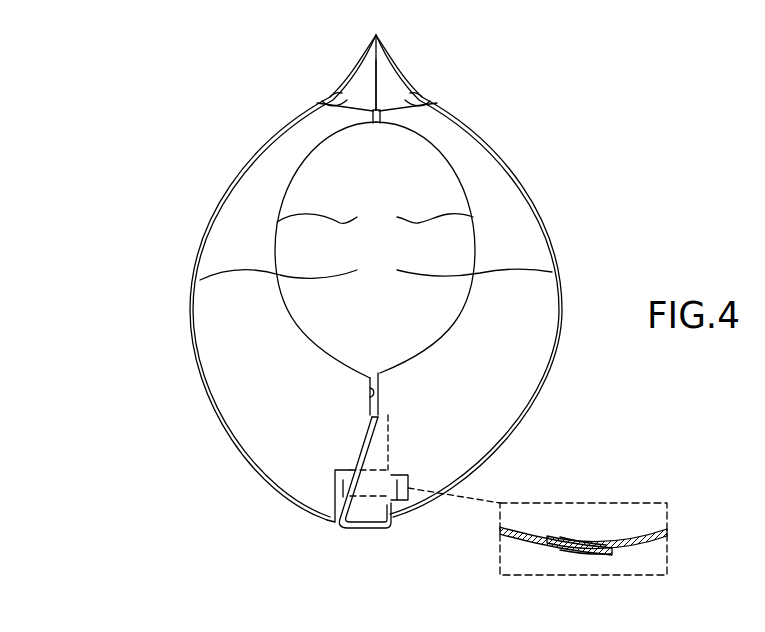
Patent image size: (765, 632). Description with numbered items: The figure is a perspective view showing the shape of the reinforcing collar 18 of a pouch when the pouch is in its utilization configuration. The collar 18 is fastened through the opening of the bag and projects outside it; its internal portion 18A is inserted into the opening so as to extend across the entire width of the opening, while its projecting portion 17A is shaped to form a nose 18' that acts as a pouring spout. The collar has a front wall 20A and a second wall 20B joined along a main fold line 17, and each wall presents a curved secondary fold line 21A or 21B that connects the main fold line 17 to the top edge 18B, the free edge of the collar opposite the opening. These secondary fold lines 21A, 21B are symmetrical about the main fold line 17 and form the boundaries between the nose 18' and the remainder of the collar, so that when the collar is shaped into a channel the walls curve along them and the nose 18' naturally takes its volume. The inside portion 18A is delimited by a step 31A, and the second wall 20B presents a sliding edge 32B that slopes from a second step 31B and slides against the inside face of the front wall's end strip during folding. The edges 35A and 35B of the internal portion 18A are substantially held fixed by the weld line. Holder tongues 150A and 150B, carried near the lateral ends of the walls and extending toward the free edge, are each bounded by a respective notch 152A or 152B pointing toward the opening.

The reinforcing collar 18 is at (328, 277).
The nose 18' is at (397, 70).
The secondary fold line 21A is at (317, 103).
The secondary fold line 21B is at (437, 103).
The main fold line 17 is at (362, 133).
The projecting portion 17A is at (378, 84).
The internal portion 18A is at (375, 215).
The top edge 18B is at (376, 270).
The front wall 20A is at (284, 370).
The second wall 20B is at (515, 382).
The edge of internal portion 35A is at (380, 372).
The edge of internal portion 35B is at (370, 377).
The step 31A is at (388, 415).
The step 31B is at (370, 394).
The sliding edge 32B is at (358, 448).
The holder tongue 150A is at (592, 557).
The holder tongue 150B is at (584, 536).
The notch 152A is at (525, 548).
The notch 152B is at (633, 536).